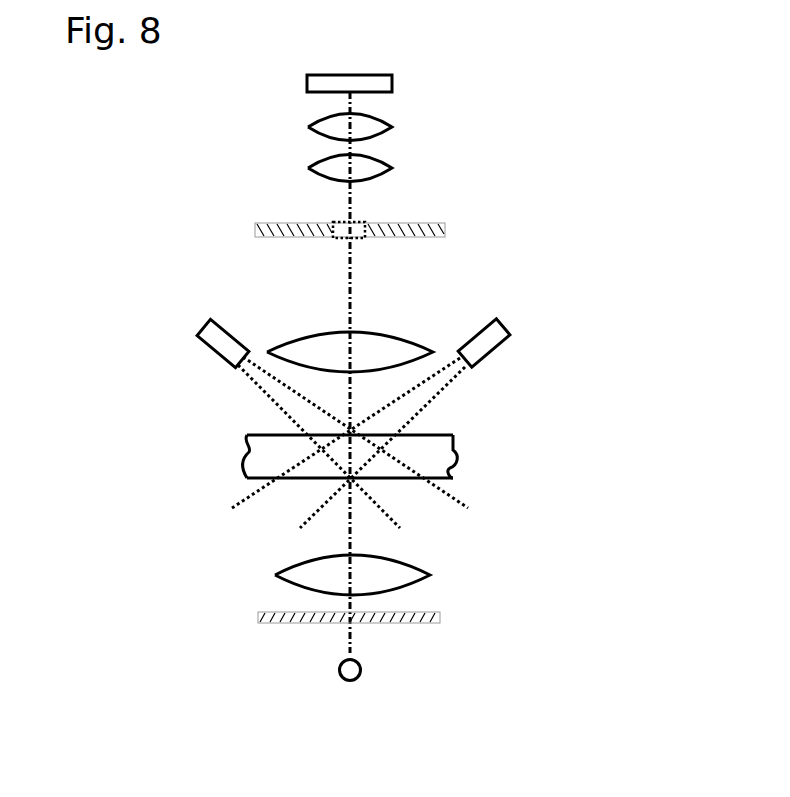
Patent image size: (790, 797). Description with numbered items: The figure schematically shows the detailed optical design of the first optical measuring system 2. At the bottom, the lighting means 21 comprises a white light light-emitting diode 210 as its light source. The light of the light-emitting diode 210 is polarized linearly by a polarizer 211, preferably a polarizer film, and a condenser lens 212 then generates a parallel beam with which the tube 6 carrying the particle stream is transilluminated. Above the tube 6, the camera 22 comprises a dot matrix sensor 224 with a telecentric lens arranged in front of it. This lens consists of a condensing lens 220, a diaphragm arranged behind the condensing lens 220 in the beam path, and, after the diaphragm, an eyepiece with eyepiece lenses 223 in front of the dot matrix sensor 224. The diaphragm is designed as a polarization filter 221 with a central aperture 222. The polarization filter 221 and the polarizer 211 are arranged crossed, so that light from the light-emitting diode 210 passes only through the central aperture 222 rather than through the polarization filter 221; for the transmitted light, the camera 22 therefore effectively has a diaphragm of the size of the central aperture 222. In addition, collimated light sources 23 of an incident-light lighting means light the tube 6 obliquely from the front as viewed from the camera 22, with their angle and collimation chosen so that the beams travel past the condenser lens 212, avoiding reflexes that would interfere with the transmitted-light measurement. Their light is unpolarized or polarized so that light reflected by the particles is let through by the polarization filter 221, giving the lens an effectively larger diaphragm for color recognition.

The first optical measuring system 2 is at (614, 172).
The camera 22 is at (545, 257).
The lighting means 21 is at (545, 590).
The collimated light sources 23 is at (512, 335).
The tube 6 is at (435, 435).
The dot matrix sensor 224 is at (307, 77).
The eyepiece lenses 223 is at (392, 168).
The central aperture 222 is at (342, 222).
The polarization filter 221 is at (400, 223).
The condensing lens 220 is at (393, 333).
The condenser lens 212 is at (275, 576).
The polarizer 211 is at (440, 617).
The white light light-emitting diode 210 is at (362, 666).